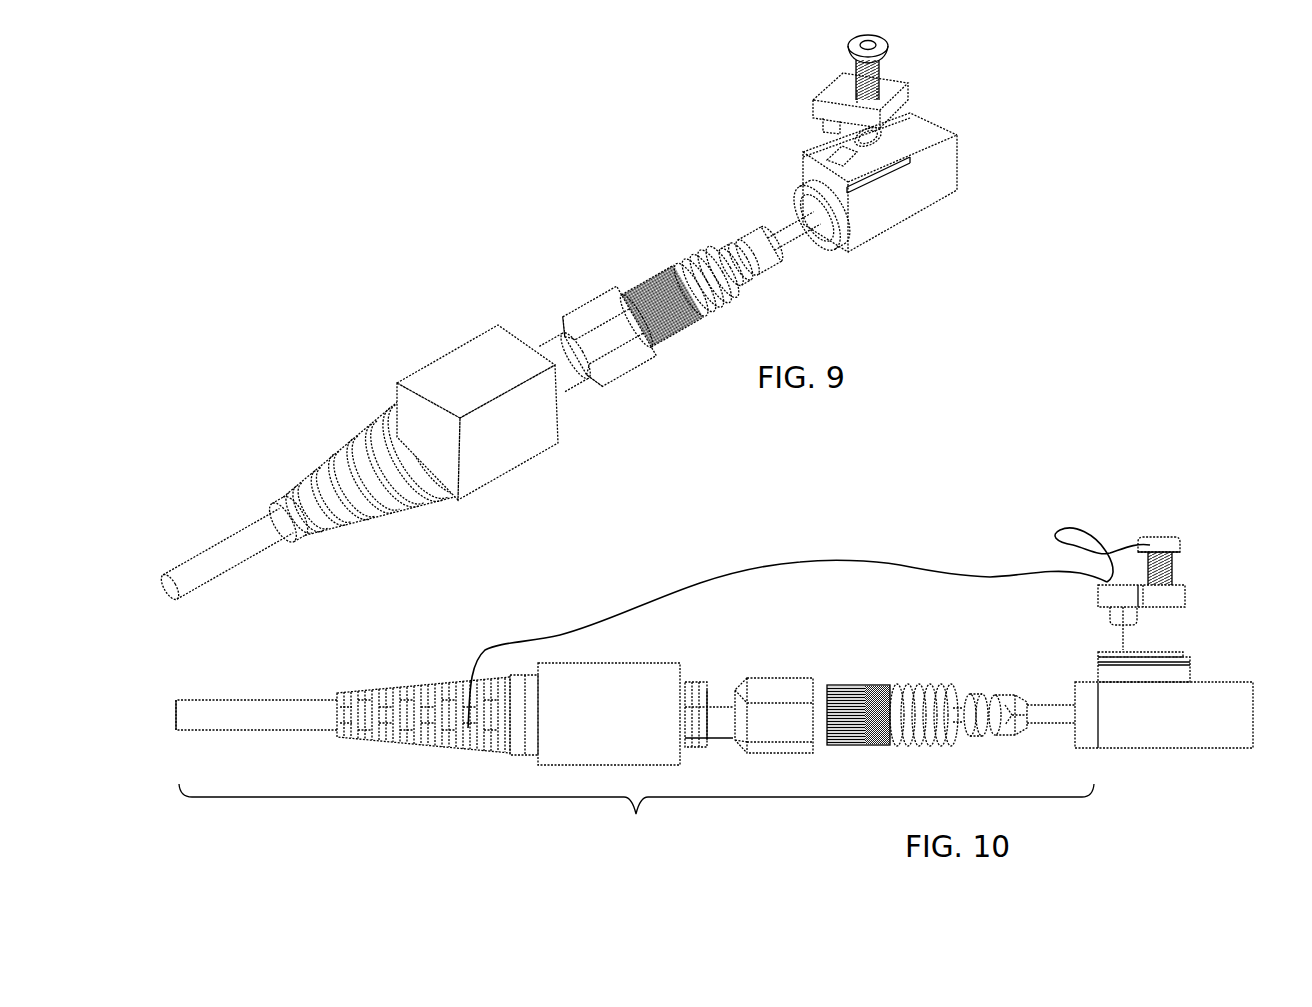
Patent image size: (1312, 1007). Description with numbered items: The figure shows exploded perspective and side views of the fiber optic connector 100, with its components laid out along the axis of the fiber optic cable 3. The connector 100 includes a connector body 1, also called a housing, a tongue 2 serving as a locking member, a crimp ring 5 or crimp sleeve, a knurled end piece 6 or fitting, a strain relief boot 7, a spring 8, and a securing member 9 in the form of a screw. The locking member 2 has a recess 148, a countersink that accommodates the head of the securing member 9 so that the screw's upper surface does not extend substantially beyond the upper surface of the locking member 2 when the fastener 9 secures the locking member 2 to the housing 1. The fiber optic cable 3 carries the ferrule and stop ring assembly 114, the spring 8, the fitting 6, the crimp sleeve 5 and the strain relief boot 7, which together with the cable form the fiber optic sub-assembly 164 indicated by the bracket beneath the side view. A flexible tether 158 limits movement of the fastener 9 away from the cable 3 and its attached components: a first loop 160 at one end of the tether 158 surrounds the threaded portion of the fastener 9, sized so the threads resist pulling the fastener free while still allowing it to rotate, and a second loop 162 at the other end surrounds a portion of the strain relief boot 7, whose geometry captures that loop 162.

In FIG. 9, the fiber optic connector 100 is at (697, 134).
In FIG. 10, the fiber optic connector 100 is at (825, 628).
In FIG. 9, the recess 148 is at (851, 92).
In FIG. 10, the tether 158 is at (927, 570).
In FIG. 10, the first loop 160 is at (1176, 555).
In FIG. 10, the securing member 9 is at (1140, 530).
In FIG. 10, the tongue 2 is at (1120, 592).
In FIG. 10, the connector body 1 is at (1113, 700).
In FIG. 10, the fiber optic cable 3 is at (315, 713).
In FIG. 10, the second loop 162 is at (468, 722).
In FIG. 10, the strain relief boot 7 is at (617, 702).
In FIG. 10, the crimp ring 5 is at (780, 688).
In FIG. 10, the knurled end piece 6 is at (890, 693).
In FIG. 10, the spring 8 is at (963, 697).
In FIG. 10, the ferrule and stop ring assembly 114 is at (1005, 703).
In FIG. 10, the fiber optic sub-assembly 164 is at (636, 812).